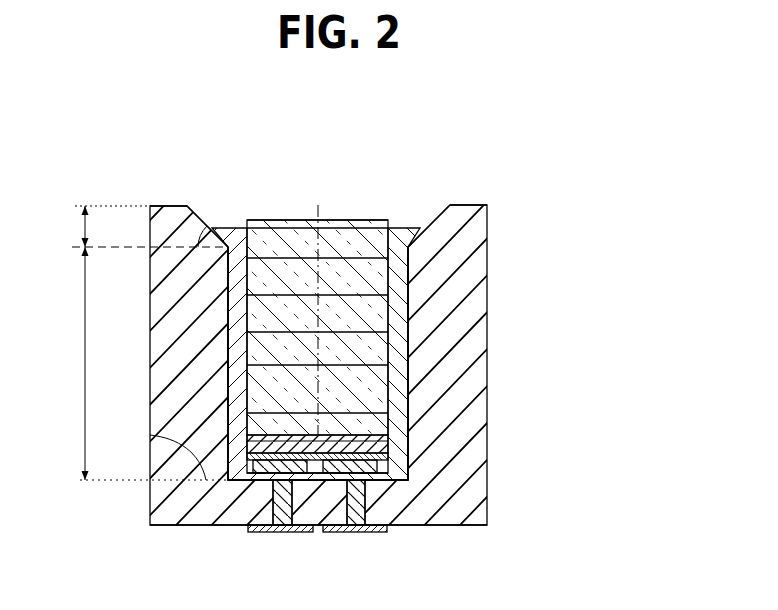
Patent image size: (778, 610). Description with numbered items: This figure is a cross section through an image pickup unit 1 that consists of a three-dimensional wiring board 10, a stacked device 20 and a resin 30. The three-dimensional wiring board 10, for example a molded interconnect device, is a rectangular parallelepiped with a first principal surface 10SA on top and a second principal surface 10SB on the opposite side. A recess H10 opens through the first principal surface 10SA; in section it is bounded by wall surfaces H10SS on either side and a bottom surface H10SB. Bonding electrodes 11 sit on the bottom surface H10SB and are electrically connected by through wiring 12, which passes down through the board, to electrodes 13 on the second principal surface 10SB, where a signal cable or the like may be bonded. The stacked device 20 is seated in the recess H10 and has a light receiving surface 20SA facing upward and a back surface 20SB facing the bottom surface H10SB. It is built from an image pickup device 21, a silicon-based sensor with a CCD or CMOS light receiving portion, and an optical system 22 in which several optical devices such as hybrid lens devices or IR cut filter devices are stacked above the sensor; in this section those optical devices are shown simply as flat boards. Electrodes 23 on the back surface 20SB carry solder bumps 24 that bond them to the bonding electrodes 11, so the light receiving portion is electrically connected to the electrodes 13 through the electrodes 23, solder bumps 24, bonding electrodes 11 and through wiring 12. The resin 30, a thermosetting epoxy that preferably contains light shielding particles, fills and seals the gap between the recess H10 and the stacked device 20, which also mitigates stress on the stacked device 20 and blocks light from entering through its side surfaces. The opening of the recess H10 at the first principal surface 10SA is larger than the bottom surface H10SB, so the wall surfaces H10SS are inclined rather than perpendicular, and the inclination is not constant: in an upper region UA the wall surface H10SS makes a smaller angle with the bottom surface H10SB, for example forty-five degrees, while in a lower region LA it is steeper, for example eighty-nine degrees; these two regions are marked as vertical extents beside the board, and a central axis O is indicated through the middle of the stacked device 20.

The image pickup unit 1 is at (578, 173).
The three-dimensional wiring board 10 is at (488, 221).
The first principal surface 10SA is at (168, 198).
The second principal surface 10SB is at (187, 536).
The recess H10 is at (390, 187).
The bottom surface H10SB is at (234, 476).
The wall surface H10SS is at (396, 275).
The resin 30 is at (407, 226).
The stacked device 20 is at (556, 282).
The light receiving surface 20SA is at (288, 212).
The back surface 20SB is at (258, 480).
The image pickup device 21 is at (405, 447).
The optical system 22 is at (392, 327).
The electrodes 23 is at (390, 461).
The solder bumps 24 is at (380, 467).
The bonding electrodes 11 is at (412, 474).
The through wiring 12 is at (370, 508).
The electrodes 13 is at (360, 533).
The center axis O is at (317, 308).
The upper region UA is at (131, 226).
The lower region LA is at (133, 363).